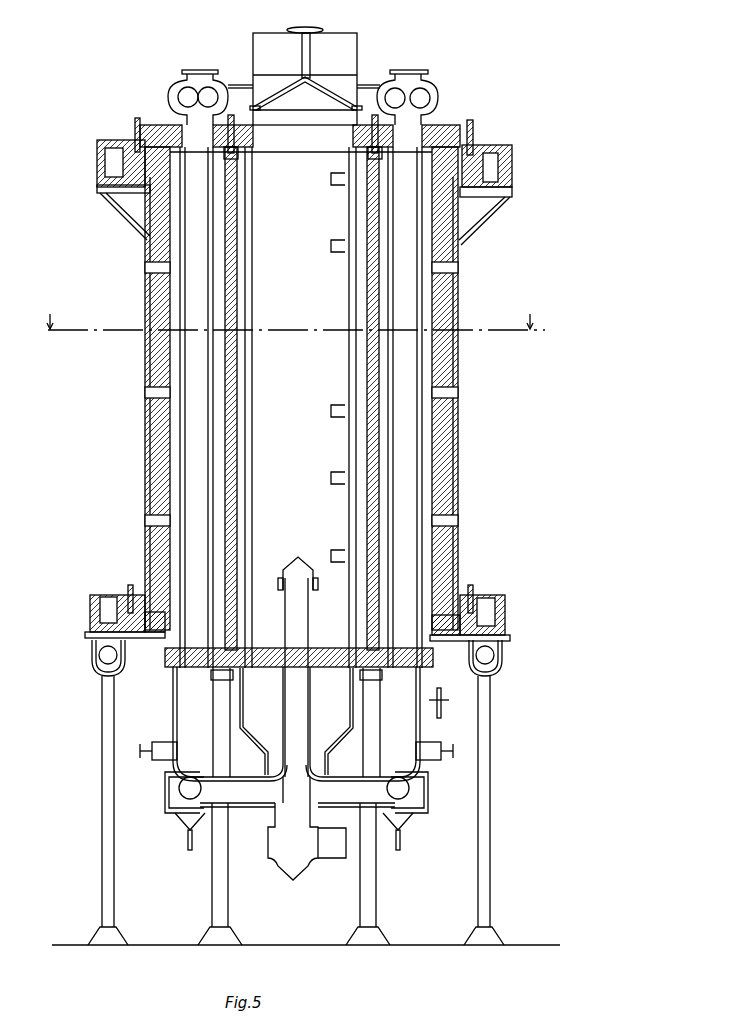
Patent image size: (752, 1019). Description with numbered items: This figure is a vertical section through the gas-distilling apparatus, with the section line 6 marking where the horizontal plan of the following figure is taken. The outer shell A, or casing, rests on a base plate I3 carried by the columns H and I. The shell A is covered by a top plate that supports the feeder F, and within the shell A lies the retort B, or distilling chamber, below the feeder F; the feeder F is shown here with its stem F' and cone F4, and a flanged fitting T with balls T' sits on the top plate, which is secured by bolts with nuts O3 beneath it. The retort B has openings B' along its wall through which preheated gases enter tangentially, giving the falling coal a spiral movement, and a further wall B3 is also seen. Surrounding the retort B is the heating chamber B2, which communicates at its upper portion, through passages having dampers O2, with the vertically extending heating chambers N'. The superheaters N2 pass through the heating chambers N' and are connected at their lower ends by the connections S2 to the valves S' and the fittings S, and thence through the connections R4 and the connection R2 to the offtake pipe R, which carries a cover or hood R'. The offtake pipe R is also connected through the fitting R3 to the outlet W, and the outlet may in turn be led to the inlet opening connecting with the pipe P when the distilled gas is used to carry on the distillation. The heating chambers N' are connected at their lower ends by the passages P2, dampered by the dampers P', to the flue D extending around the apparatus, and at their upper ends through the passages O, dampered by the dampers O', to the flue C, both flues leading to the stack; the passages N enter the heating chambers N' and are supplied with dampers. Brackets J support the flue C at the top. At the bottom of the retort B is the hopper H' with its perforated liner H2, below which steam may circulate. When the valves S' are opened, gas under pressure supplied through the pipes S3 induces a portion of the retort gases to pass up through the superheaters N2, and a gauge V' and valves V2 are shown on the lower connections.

The shell A is at (145, 420).
The retort B is at (300, 407).
The openings B' is at (326, 367).
The heating chamber B2 is at (243, 236).
The chamber inner wall B3 is at (357, 290).
The flue C is at (108, 162).
The flue D is at (100, 609).
The feeder F is at (305, 66).
The hopper valve stem F' is at (305, 41).
The hopper cone F4 is at (306, 93).
The column H is at (294, 874).
The hopper H' is at (296, 721).
The liner H2 is at (247, 725).
The column I is at (296, 810).
The base plate I3 is at (88, 636).
The bracket J is at (120, 214).
The passages N is at (292, 394).
The heating chambers N' is at (355, 407).
The superheaters N2 is at (185, 470).
The passages O is at (304, 139).
The dampers O' is at (307, 117).
The dampers O2 is at (232, 116).
The bolt nut O3 is at (368, 154).
The pipe P is at (310, 658).
The dampers P' is at (295, 572).
The passages P2 is at (120, 610).
The offtake pipe R is at (296, 677).
The cover R' is at (296, 563).
The connection R2 is at (296, 790).
The fitting R3 is at (293, 841).
The connections R4 is at (297, 792).
The fittings S is at (285, 797).
The valves S' is at (295, 749).
The connections S2 is at (178, 730).
The pipes S3 is at (189, 846).
The top pipe fitting T is at (303, 80).
The ball valve T' is at (304, 71).
The gauge V' is at (444, 703).
The valve V2 is at (190, 790).
The outlet W is at (332, 843).
The section line 6- 6 is at (294, 334).